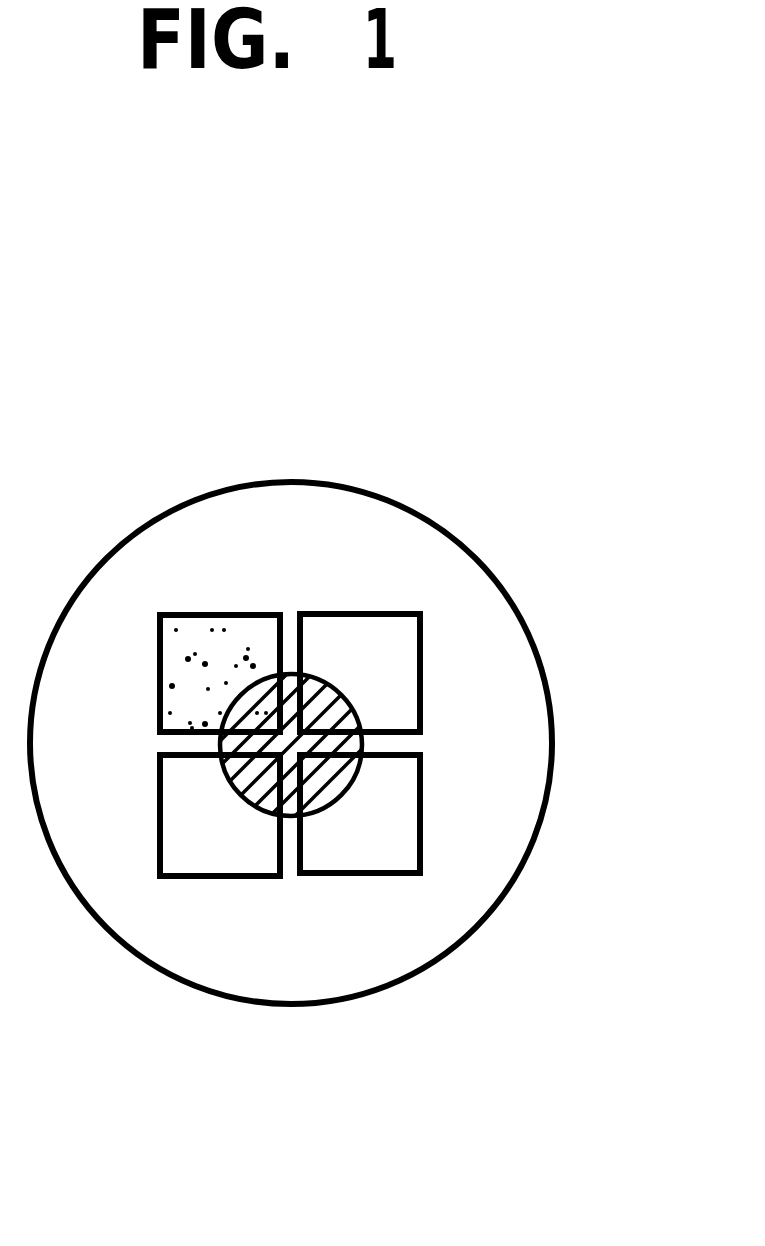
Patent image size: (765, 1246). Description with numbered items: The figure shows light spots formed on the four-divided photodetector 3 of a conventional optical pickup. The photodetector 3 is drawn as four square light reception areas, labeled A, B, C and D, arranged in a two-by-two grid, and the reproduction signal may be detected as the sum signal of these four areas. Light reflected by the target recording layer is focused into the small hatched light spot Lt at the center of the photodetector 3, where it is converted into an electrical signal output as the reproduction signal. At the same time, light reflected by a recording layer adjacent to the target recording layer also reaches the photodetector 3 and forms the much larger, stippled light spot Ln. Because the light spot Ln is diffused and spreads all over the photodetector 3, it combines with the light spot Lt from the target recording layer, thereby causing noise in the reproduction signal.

The 4-divided photodetector 3 is at (430, 605).
The light spot Lt is at (350, 705).
The light spot Ln is at (412, 977).